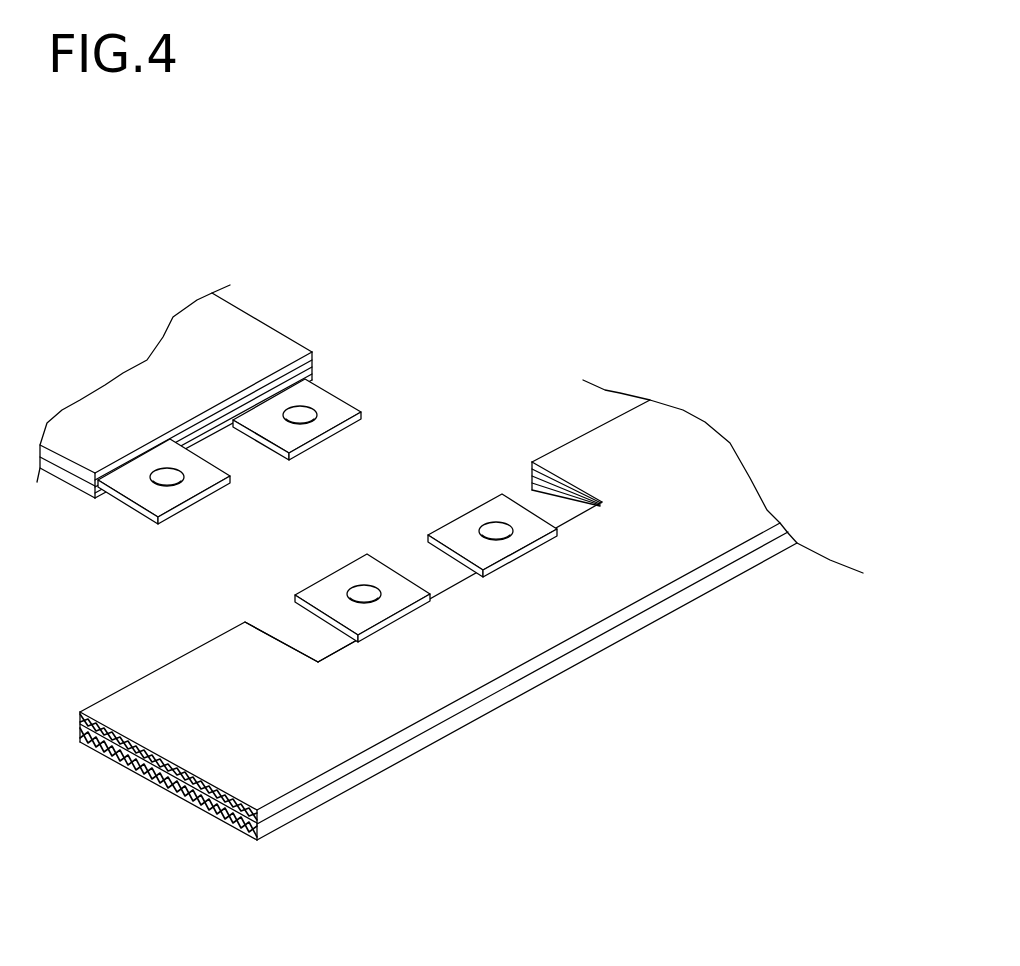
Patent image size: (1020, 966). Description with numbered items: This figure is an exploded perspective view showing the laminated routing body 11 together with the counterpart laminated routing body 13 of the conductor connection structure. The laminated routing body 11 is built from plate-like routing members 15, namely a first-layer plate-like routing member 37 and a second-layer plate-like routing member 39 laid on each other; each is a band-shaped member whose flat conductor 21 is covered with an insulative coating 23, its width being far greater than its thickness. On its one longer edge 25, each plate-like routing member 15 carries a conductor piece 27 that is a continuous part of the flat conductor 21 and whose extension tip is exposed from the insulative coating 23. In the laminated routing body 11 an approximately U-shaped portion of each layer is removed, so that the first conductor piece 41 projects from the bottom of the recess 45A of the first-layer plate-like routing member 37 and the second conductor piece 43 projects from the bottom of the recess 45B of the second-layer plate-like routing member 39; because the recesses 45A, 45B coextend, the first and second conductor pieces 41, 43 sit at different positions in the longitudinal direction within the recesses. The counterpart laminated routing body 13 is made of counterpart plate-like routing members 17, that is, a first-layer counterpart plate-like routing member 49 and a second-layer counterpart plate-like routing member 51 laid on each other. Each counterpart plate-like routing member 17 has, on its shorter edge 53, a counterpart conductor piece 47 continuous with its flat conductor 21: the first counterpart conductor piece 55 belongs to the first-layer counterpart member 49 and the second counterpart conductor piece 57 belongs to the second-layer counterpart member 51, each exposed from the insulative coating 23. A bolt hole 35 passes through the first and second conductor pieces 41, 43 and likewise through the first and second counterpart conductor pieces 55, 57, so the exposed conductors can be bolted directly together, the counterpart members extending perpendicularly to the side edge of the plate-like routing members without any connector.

The laminated routing body 11 is at (471, 583).
The counterpart laminated routing body 13 is at (181, 369).
The plate-like routing member 15 is at (529, 686).
The counterpart plate-like routing member 17 is at (105, 543).
The flat conductor 21 is at (173, 790).
The insulative coating 23 is at (676, 462).
The longer edge 25 is at (563, 442).
The conductor piece 27 is at (426, 518).
The bolt hole 35 is at (177, 478).
The first-layer plate-like routing member 37 is at (583, 662).
The second-layer plate-like routing member 39 is at (632, 620).
The first conductor piece 41 is at (457, 513).
The second conductor piece 43 is at (352, 556).
The recess 45A is at (318, 655).
The recess 45B is at (359, 639).
The counterpart conductor piece 47 is at (211, 302).
The first-layer counterpart plate-like routing member 49 is at (79, 490).
The second-layer counterpart plate-like routing member 51 is at (59, 468).
The shorter edge 53 is at (205, 440).
The first counterpart conductor piece 55 is at (292, 392).
The second counterpart conductor piece 57 is at (155, 453).